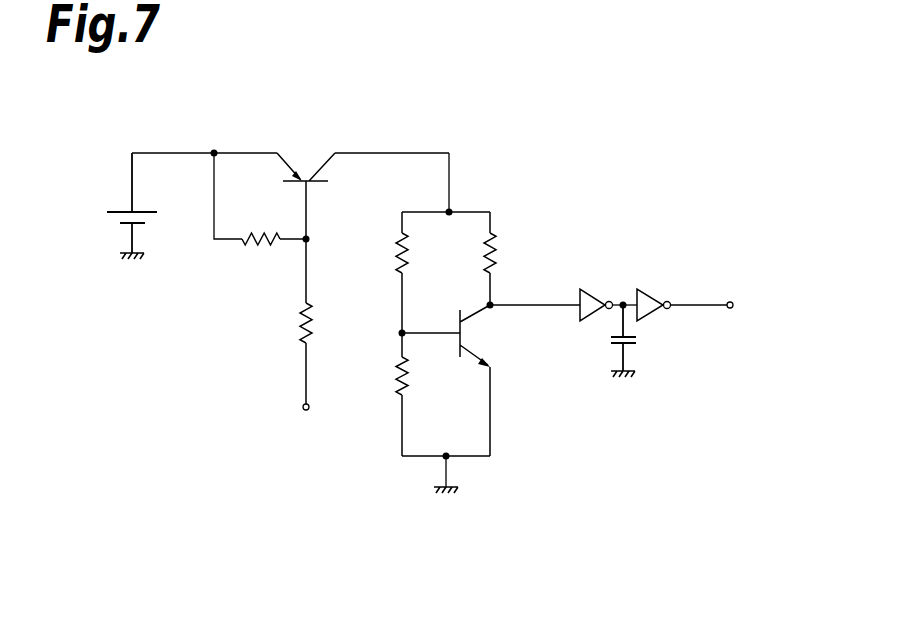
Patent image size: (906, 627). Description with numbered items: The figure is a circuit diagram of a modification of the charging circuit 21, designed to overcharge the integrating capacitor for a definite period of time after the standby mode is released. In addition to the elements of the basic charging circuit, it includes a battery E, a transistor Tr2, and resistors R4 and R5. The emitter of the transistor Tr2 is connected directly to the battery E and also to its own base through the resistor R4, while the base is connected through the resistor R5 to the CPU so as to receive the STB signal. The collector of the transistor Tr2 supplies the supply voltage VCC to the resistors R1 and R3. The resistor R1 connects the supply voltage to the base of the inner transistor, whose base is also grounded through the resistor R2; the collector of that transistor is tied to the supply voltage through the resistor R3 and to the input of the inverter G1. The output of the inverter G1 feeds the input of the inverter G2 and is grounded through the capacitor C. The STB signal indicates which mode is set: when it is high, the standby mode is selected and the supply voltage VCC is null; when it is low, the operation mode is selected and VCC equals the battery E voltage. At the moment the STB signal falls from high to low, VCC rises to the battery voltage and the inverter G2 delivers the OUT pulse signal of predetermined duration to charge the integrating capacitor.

The charging circuit 21 is at (630, 137).
The transistor Tr2 is at (306, 175).
The battery E is at (119, 206).
The resistor R4 is at (261, 259).
The resistor R5 is at (286, 321).
The STB signal STB is at (301, 424).
The supply voltage VCC is at (453, 196).
The resistor R1 is at (382, 272).
The resistor R2 is at (383, 394).
The resistor R3 is at (509, 258).
The inverter G1 is at (600, 292).
The inverter G2 is at (659, 292).
The capacitor C is at (635, 341).
The OUT signal OUT is at (736, 305).